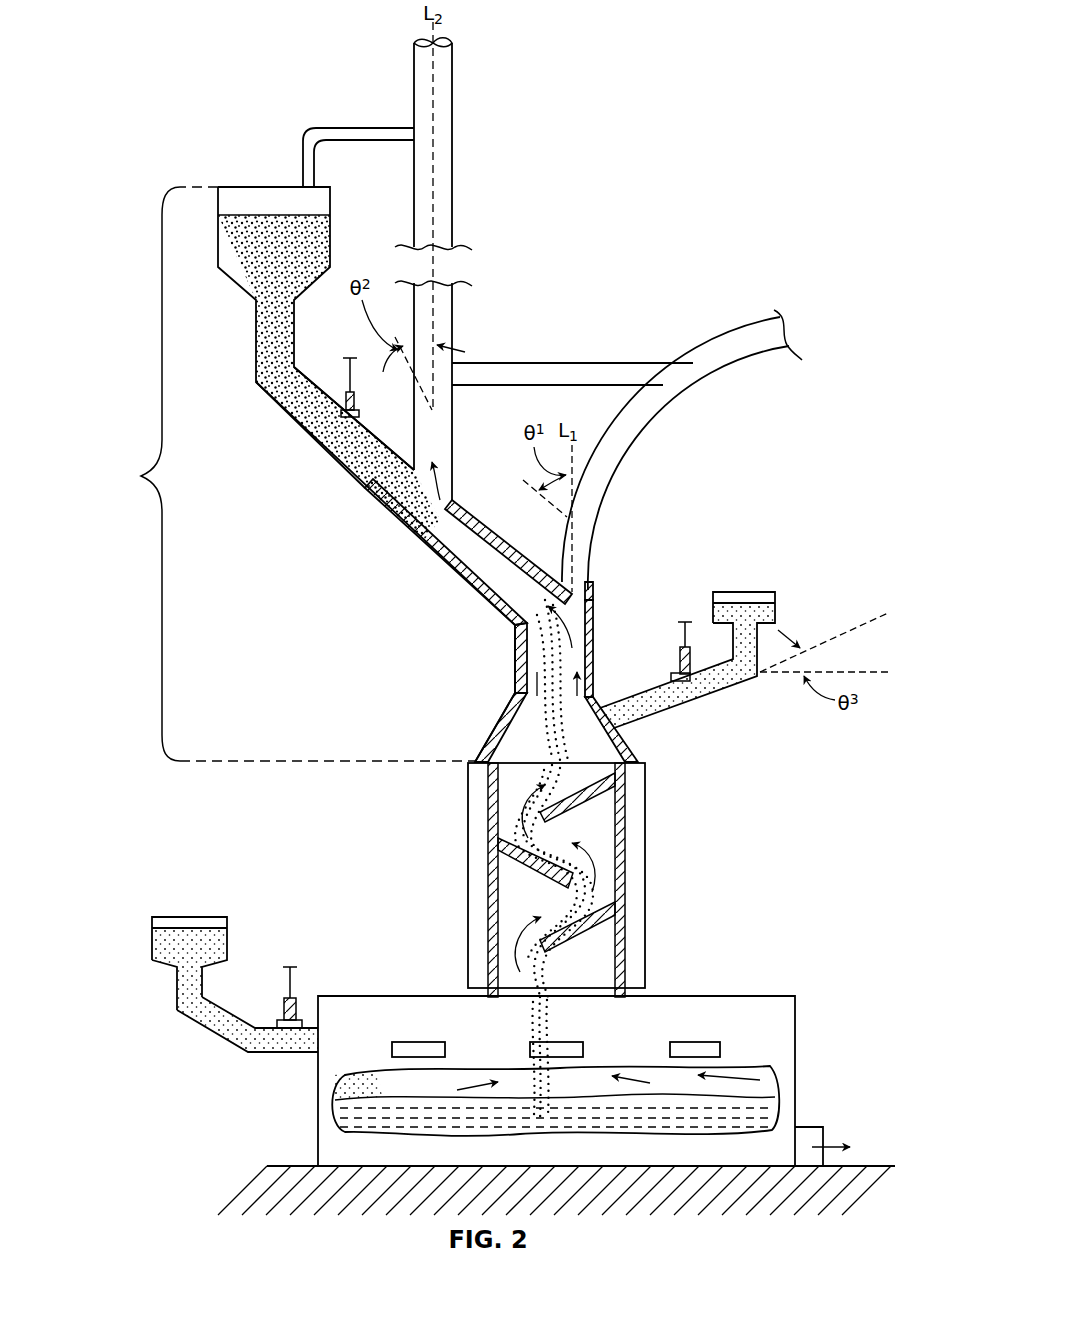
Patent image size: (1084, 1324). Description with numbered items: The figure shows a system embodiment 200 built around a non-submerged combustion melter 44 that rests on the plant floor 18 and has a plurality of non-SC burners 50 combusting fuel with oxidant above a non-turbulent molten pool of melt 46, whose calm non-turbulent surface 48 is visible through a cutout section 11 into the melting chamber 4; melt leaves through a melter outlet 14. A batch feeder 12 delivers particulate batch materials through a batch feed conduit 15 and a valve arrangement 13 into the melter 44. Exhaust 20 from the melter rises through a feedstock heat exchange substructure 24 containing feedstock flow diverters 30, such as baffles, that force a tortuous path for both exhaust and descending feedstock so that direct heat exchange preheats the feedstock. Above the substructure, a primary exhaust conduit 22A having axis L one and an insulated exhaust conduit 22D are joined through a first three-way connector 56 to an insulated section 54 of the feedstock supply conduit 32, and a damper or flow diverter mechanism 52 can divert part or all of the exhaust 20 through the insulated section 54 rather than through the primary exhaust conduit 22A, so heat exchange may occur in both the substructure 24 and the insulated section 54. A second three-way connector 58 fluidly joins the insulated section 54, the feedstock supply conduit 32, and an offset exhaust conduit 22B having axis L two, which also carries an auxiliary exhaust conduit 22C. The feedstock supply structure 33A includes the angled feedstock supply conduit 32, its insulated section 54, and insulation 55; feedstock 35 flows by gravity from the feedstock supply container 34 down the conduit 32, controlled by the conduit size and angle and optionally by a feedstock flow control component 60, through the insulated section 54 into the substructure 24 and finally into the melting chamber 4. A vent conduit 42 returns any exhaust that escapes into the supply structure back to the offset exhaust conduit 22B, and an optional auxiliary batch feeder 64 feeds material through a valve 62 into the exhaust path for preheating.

The system embodiment 200 is at (258, 92).
The vent conduit 42 is at (350, 128).
The offset exhaust conduit 22B is at (452, 146).
The feedstock 35 is at (256, 217).
The feedstock supply container 34 is at (330, 233).
The auxiliary exhaust conduit 22C is at (546, 363).
The feedstock flow control component 60 is at (355, 395).
The feedstock supply conduit 32 is at (318, 433).
The primary exhaust conduit 22A is at (648, 433).
The second 3-way connector 58 is at (457, 500).
The insulation 55 is at (410, 530).
The insulated section 54 is at (470, 588).
The flow diverter mechanism 52 is at (595, 593).
The first 3-way connector 56 is at (598, 640).
The insulated exhaust conduit 22D is at (597, 668).
The valve 62 is at (691, 650).
The auxiliary batch feeder 64 is at (775, 596).
The feedstock heat exchange substructure 24 is at (620, 797).
The exhaust 20 is at (598, 875).
The feedstock flow diverters 30 is at (600, 930).
The feedstock supply structure 33A is at (284, 474).
The batch feeder 12 is at (177, 988).
The valve arrangement 13 is at (285, 1010).
The batch feed conduit 15 is at (217, 1030).
The non-submerged combustion melter 44 is at (770, 996).
The non-turbulent surface 48 is at (383, 1097).
The non-SC burners 50 is at (418, 1042).
The melting chamber 4 is at (748, 1083).
The cutout section 11 is at (340, 1105).
The non-turbulent molten pool of melt 46 is at (757, 1117).
The melter outlet 14 is at (823, 1135).
The plant floor 18 is at (277, 1165).